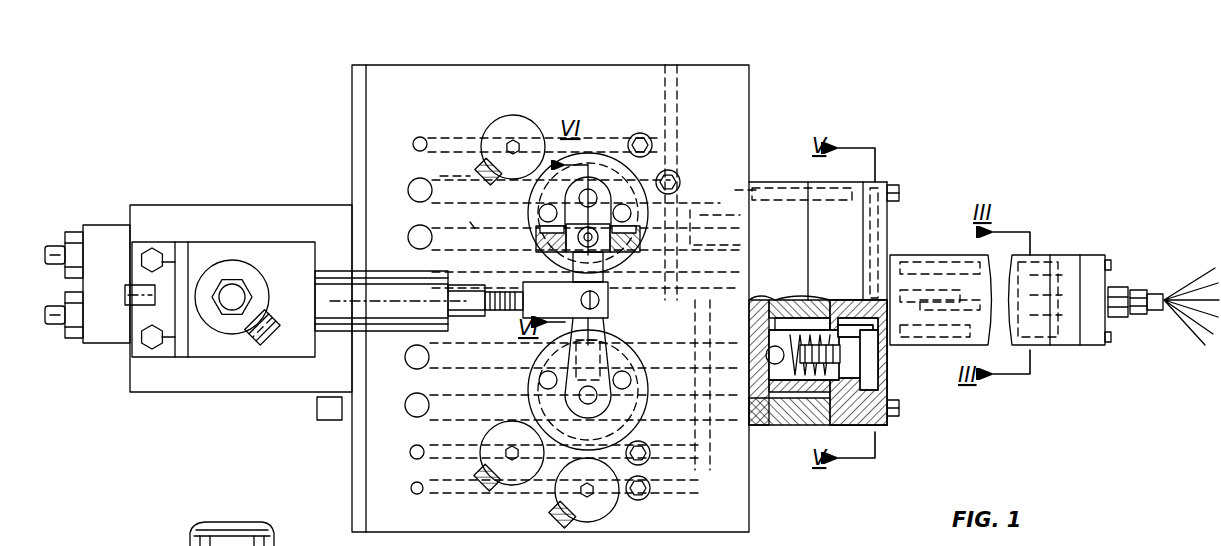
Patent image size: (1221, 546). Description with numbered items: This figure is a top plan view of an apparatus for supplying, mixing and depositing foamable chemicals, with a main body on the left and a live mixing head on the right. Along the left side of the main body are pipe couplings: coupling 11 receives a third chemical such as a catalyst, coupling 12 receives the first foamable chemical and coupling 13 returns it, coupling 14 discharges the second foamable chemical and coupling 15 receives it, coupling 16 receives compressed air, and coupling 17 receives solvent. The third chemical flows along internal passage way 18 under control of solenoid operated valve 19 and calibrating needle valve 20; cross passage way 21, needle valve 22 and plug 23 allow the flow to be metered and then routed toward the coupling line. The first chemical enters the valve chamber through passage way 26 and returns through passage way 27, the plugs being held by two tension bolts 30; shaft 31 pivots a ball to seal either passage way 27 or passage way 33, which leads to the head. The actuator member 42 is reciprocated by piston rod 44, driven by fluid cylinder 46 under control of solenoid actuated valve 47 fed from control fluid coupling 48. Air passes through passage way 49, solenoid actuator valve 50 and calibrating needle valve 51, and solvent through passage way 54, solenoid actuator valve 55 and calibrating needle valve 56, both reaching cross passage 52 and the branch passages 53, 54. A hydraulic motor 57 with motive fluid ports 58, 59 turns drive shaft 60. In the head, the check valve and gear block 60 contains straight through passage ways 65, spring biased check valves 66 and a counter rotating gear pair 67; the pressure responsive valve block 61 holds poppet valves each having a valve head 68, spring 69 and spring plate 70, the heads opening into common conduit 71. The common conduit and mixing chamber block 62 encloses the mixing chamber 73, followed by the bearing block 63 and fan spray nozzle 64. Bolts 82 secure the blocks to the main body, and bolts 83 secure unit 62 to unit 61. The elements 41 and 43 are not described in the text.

The coupling 11 is at (413, 143).
The coupling 12 is at (408, 190).
The coupling 13 is at (408, 237).
The coupling 14 is at (405, 357).
The coupling 15 is at (405, 405).
The coupling 16 is at (410, 452).
The coupling 17 is at (411, 488).
The internal passage way 18 is at (452, 136).
The solenoid operated valve 19 is at (528, 130).
The needle valve 20 is at (640, 132).
The cross passage way 21 is at (672, 122).
The needle valve 22 is at (680, 178).
The plug 23 is at (671, 66).
The passage way 26 is at (448, 180).
The passage way 27 is at (472, 226).
The tension bolts 30 is at (617, 205).
The shaft 31 is at (578, 196).
The passage way 33 is at (748, 244).
The bearing block 41 is at (572, 262).
The actuator member 42 is at (565, 300).
The pin 43 is at (600, 300).
The piston rod 44 is at (502, 311).
The fluid cylinder 46 is at (330, 270).
The solenoid actuated valve 47 is at (232, 265).
The control fluid coupling 48 is at (128, 300).
The passage way 49 is at (449, 432).
The solenoid actuator valve 50 is at (520, 480).
The calibrating needle valve 51 is at (642, 442).
The cross passage 52 is at (700, 428).
The branch passage 53 is at (754, 175).
The branch passage 54 is at (452, 492).
The solenoid actuator valve 55 is at (602, 508).
The calibrating needle valve 56 is at (648, 482).
The motor 57 is at (105, 228).
The motive fluid port 58 is at (57, 326).
The motive fluid port 59 is at (58, 246).
The drive shaft 60 is at (492, 278).
The automatic pressure responsive valve block 61 is at (812, 200).
The common conduit and mixing chamber block 62 is at (920, 240).
The bearing block 63 is at (1065, 262).
The fan spray nozzle 64 is at (1138, 288).
The straight through passage ways 65 is at (790, 400).
The spring biased check valves 66 is at (750, 355).
The counter rotating gear pair 67 is at (812, 300).
The valve head 68 is at (860, 345).
The spring 69 is at (840, 396).
The spring plate 70 is at (838, 306).
The common conduit 71 is at (868, 382).
The mixing chamber 73 is at (965, 268).
The bolts 82 is at (825, 183).
The bolts 83 is at (897, 185).